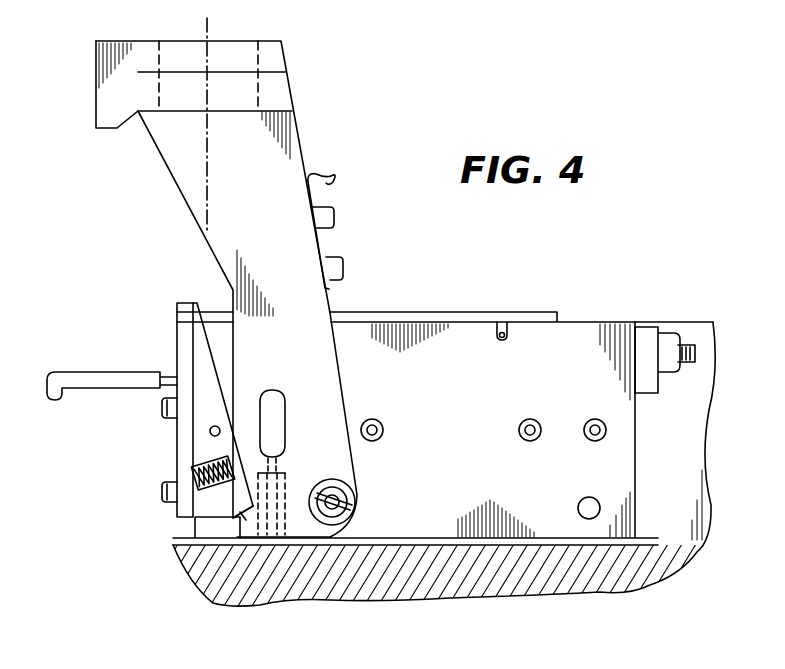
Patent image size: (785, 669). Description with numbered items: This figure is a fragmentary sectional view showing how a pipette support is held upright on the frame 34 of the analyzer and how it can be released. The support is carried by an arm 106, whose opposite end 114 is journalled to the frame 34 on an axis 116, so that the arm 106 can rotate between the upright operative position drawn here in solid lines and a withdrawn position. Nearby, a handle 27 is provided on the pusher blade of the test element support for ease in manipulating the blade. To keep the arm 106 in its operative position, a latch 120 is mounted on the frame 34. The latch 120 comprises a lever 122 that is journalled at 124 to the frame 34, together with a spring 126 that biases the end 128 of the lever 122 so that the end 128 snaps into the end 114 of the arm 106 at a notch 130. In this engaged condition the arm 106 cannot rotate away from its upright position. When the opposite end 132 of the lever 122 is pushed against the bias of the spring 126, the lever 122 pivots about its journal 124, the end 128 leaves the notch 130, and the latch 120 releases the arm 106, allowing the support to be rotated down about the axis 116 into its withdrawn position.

The handle 27 is at (58, 370).
The frame 34 is at (177, 436).
The arm 106 is at (178, 197).
The opposite end of arm 114 is at (293, 518).
The axis 116 is at (358, 500).
The latch 120 is at (161, 427).
The lever 122 is at (198, 362).
The journal 124 is at (220, 427).
The spring 126 is at (195, 470).
The end of latch 128 is at (228, 510).
The notch 130 is at (270, 470).
The opposite end of lever 132 is at (195, 300).